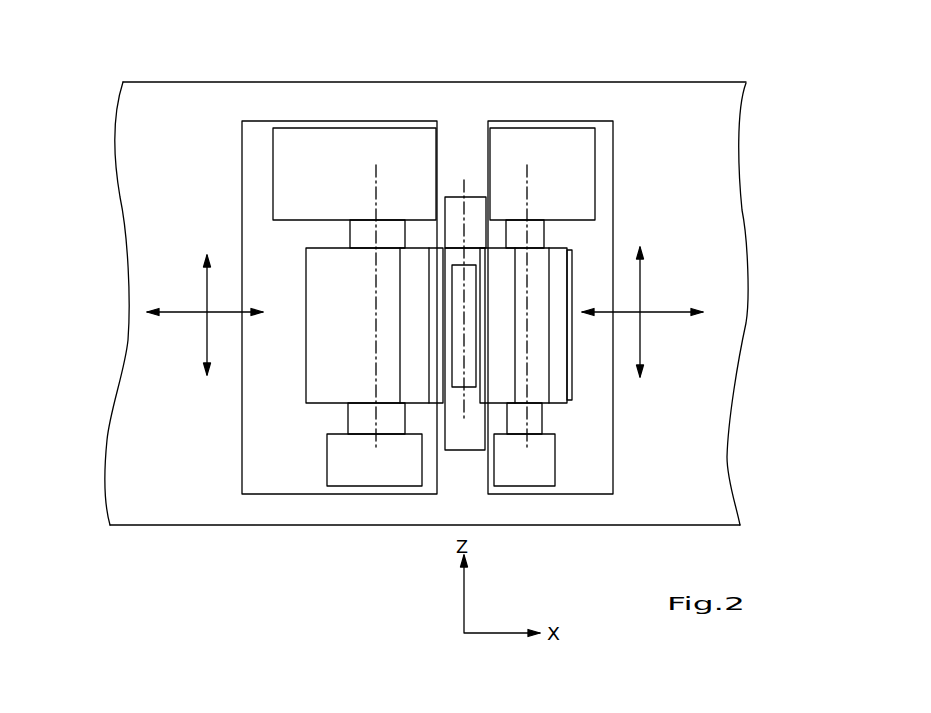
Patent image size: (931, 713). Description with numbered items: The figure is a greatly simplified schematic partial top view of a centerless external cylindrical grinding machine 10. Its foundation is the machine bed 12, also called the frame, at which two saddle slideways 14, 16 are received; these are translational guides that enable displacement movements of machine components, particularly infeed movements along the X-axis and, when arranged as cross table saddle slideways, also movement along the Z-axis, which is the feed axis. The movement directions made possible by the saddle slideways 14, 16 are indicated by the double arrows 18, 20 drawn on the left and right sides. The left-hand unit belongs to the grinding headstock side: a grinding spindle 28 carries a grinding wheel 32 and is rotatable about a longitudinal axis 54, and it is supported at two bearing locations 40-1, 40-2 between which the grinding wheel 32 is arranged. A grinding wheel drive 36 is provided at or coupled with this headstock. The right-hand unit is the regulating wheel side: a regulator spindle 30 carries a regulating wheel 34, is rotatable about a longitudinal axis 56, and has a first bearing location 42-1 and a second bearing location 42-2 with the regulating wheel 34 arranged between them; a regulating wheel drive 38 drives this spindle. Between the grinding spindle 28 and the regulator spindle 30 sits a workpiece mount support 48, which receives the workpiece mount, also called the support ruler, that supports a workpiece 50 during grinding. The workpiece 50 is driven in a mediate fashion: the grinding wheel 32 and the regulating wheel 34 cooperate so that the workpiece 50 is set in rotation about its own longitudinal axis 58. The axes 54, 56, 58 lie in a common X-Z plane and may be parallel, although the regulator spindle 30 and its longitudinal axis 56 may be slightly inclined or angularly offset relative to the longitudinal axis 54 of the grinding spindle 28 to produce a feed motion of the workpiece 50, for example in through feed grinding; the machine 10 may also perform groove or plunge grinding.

The grinding machine 10 is at (168, 552).
The machine bed 12 is at (215, 528).
The saddle slideway 14 is at (236, 177).
The saddle slideway 16 is at (614, 148).
The arrow 18 is at (182, 310).
The arrow 20 is at (655, 311).
The grinding spindle 28 is at (358, 417).
The regulator spindle 30 is at (535, 412).
The grinding wheel 32 is at (330, 277).
The regulating wheel 34 is at (552, 365).
The grinding wheel drive 36 is at (398, 128).
The regulating wheel drive 38 is at (566, 127).
The bearing location 40-1 is at (360, 200).
The bearing location 40-2 is at (350, 460).
The first bearing location 42-1 is at (516, 190).
The second bearing location 42-2 is at (552, 470).
The workpiece mount support 48 is at (457, 438).
The workpiece 50 is at (453, 375).
The longitudinal axis 54 is at (376, 340).
The longitudinal axis 56 is at (520, 442).
The longitudinal axis 58 is at (483, 295).